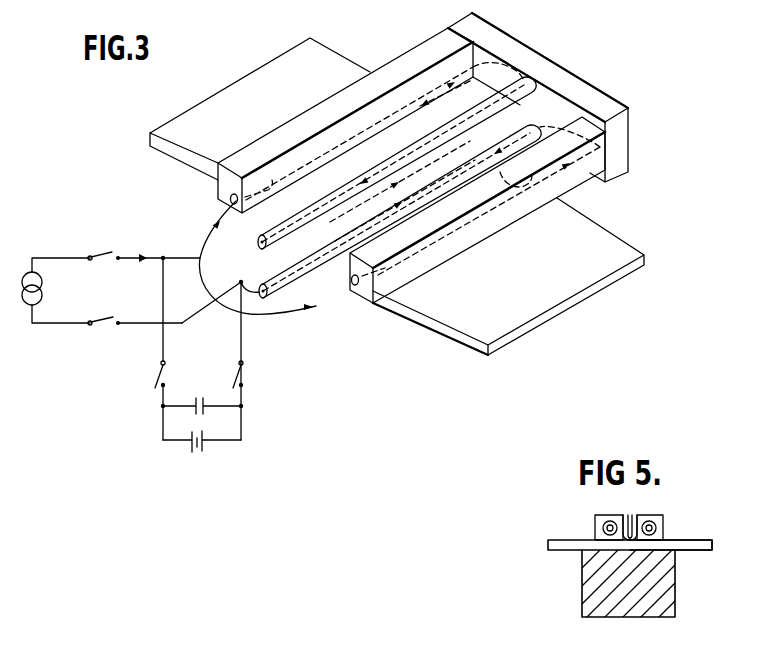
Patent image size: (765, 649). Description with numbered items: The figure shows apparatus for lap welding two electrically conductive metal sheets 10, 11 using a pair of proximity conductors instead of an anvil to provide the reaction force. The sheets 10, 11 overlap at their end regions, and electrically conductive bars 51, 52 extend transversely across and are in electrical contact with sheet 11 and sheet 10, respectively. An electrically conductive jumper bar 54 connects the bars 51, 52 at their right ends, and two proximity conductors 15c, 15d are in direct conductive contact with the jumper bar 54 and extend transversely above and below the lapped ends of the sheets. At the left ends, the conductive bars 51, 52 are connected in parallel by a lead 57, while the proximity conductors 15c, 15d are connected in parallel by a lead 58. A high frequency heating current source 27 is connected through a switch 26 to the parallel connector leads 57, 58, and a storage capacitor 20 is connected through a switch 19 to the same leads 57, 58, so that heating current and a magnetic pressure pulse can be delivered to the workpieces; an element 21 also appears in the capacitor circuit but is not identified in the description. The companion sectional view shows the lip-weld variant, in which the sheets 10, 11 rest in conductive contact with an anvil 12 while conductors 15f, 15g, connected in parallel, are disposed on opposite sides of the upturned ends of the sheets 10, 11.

In FIG. 3, the electrically conductive metal sheet 10 is at (622, 247).
In FIG. 5, the electrically conductive metal sheet 10 is at (713, 545).
In FIG. 3, the electrically conductive metal sheet 11 is at (320, 55).
In FIG. 5, the electrically conductive metal sheet 11 is at (548, 545).
In FIG. 5, the anvil 12 is at (667, 592).
In FIG. 3, the proximity conductor 15c is at (330, 190).
In FIG. 3, the proximity conductor 15d is at (305, 278).
In FIG. 5, the conductor 15f is at (607, 520).
In FIG. 5, the conductor 15g is at (657, 522).
In FIG. 3, the switch 19 is at (157, 377).
In FIG. 3, the storage capacitor 20 is at (207, 403).
In FIG. 3, the battery 21 is at (208, 448).
In FIG. 3, the switch 26 is at (111, 252).
In FIG. 3, the high frequency heating current source 27 is at (22, 300).
In FIG. 3, the electrically conductive bar 51 is at (287, 127).
In FIG. 3, the electrically conductive bar 52 is at (503, 218).
In FIG. 3, the jumper bar 54 is at (598, 95).
In FIG. 3, the lead 57 is at (212, 226).
In FIG. 3, the lead 58 is at (243, 268).